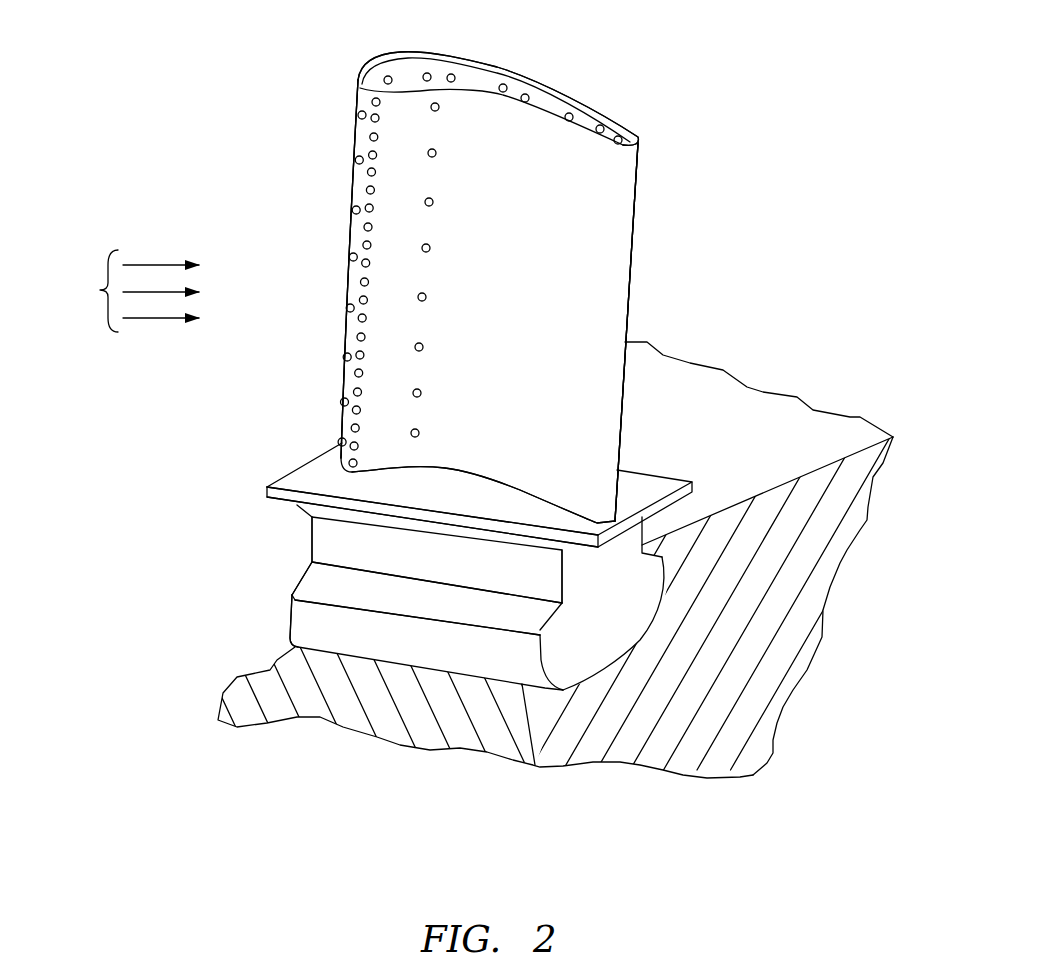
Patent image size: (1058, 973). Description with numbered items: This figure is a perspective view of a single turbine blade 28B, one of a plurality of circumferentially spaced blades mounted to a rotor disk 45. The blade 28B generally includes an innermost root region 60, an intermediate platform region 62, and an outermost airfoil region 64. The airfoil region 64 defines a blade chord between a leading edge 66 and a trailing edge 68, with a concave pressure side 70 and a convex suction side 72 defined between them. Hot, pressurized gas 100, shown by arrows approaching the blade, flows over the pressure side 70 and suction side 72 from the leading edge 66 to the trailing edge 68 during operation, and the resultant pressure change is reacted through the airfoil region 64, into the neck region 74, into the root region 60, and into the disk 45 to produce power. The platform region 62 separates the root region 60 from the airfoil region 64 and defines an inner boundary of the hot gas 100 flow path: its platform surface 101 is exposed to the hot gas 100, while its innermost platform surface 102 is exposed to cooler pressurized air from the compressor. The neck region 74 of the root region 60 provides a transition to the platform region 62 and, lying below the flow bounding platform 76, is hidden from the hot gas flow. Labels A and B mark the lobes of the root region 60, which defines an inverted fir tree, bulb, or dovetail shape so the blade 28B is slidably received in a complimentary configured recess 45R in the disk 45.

The blade 28B is at (677, 112).
The airfoil region 64 is at (732, 226).
The leading edge 66 is at (347, 233).
The trailing edge 68 is at (627, 310).
The concave pressure side 70 is at (613, 238).
The convex suction side 72 is at (603, 205).
The platform surface 101 is at (310, 480).
The hot pressurized gas 100 is at (123, 291).
The platform region 62 is at (677, 466).
The flow bounding platform 76 is at (267, 487).
The innermost platform surface 102 is at (280, 503).
The neck region 74 is at (448, 562).
The root upper lobe A is at (312, 562).
The root lower lobe B is at (292, 595).
The innermost root region 60 is at (612, 609).
The disk 45 is at (362, 725).
The complimentary configured recess 45R is at (590, 677).